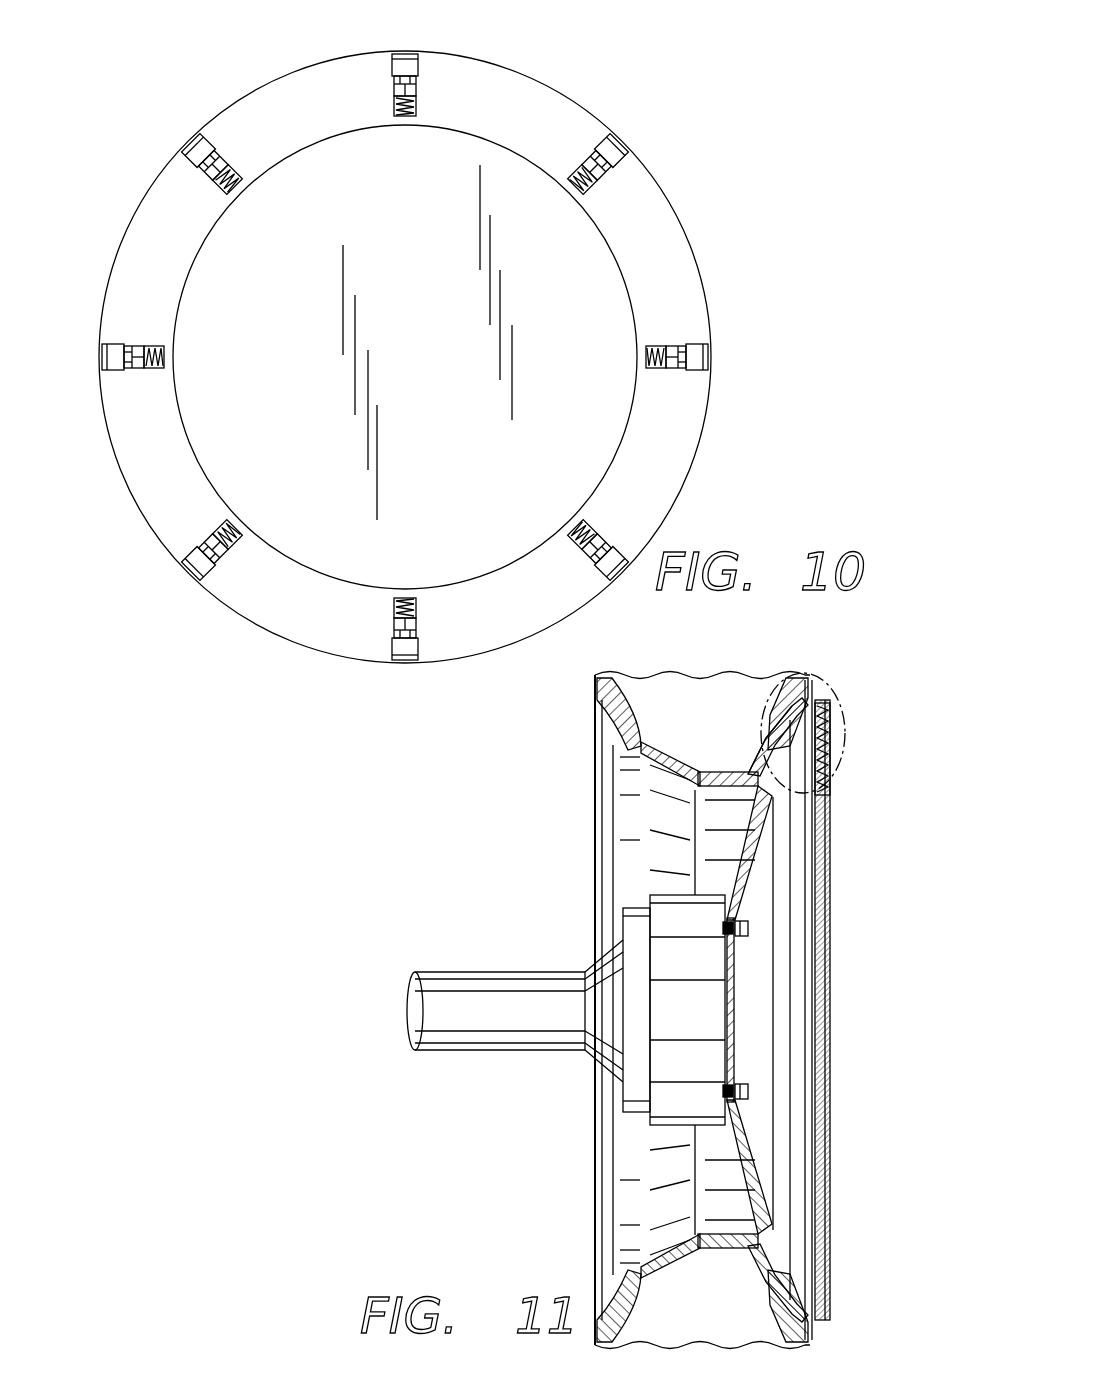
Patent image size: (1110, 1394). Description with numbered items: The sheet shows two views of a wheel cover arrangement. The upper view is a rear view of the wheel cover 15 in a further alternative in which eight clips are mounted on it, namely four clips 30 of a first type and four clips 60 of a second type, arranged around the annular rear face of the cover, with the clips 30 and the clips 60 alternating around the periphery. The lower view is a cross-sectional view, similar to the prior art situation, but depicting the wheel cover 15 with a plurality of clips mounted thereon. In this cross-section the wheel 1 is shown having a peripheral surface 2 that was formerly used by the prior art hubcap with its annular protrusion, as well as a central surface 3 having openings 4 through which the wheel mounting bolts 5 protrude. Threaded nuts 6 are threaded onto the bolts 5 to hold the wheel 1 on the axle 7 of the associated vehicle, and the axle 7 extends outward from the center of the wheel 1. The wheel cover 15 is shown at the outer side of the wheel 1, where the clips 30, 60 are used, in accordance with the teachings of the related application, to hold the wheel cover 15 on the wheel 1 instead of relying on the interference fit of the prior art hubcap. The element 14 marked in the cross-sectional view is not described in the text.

In FIG. 11, the wheel 1 is at (588, 878).
In FIG. 11, the peripheral surface 2 is at (740, 760).
In FIG. 11, the central surface 3 is at (742, 1125).
In FIG. 11, the openings 4 is at (745, 1088).
In FIG. 11, the wheel mounting bolts 5 is at (725, 1105).
In FIG. 11, the threaded nuts 6 is at (748, 930).
In FIG. 11, the axle 7 is at (480, 1040).
In FIG. 11, the lock ring 14 is at (836, 684).
In FIG. 10, the wheel cover 15 is at (265, 648).
In FIG. 11, the wheel cover 15 is at (841, 870).
In FIG. 10, the clips of a first type 30 is at (188, 138).
In FIG. 10, the clips of a second type 60 is at (428, 48).